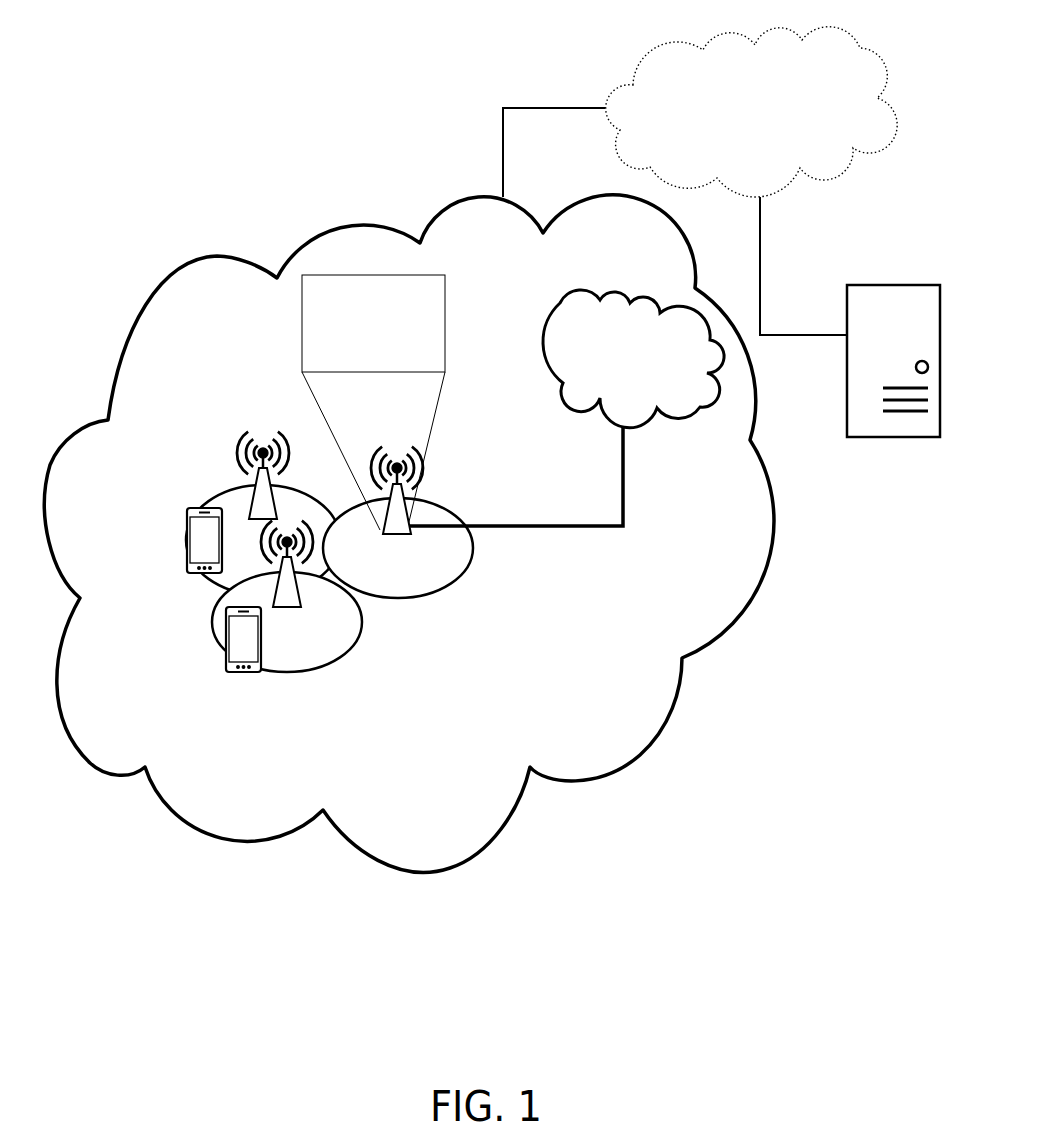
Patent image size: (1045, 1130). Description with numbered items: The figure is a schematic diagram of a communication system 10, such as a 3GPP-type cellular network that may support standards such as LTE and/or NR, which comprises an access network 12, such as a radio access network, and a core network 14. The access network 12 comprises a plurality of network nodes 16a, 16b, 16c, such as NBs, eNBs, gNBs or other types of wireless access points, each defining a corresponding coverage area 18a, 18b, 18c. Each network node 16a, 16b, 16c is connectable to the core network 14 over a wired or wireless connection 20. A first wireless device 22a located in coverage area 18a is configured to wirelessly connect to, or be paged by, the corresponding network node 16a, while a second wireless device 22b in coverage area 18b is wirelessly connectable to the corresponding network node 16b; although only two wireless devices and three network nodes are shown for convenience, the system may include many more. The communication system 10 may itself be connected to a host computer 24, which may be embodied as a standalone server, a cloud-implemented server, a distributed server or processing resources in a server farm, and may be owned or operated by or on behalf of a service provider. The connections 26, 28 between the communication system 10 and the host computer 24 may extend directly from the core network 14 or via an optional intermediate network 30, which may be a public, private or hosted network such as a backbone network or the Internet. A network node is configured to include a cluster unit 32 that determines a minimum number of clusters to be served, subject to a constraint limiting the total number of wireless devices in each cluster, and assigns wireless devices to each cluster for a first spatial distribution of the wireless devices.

The communication system 10 is at (212, 41).
The access network 12 is at (409, 533).
The core network 14 is at (633, 359).
The network node 16a is at (232, 456).
The network node 16b is at (300, 603).
The network node 16c is at (424, 470).
The coverage area 18a is at (210, 499).
The coverage area 18b is at (362, 618).
The coverage area 18c is at (473, 548).
The wired or wireless connection 20 is at (623, 479).
The first wireless device 22a is at (187, 567).
The second wireless device 22b is at (227, 661).
The host computer 24 is at (893, 361).
The connection 26 is at (518, 108).
The connection 28 is at (803, 340).
The intermediate network 30 is at (751, 112).
The cluster unit 32 is at (373, 402).